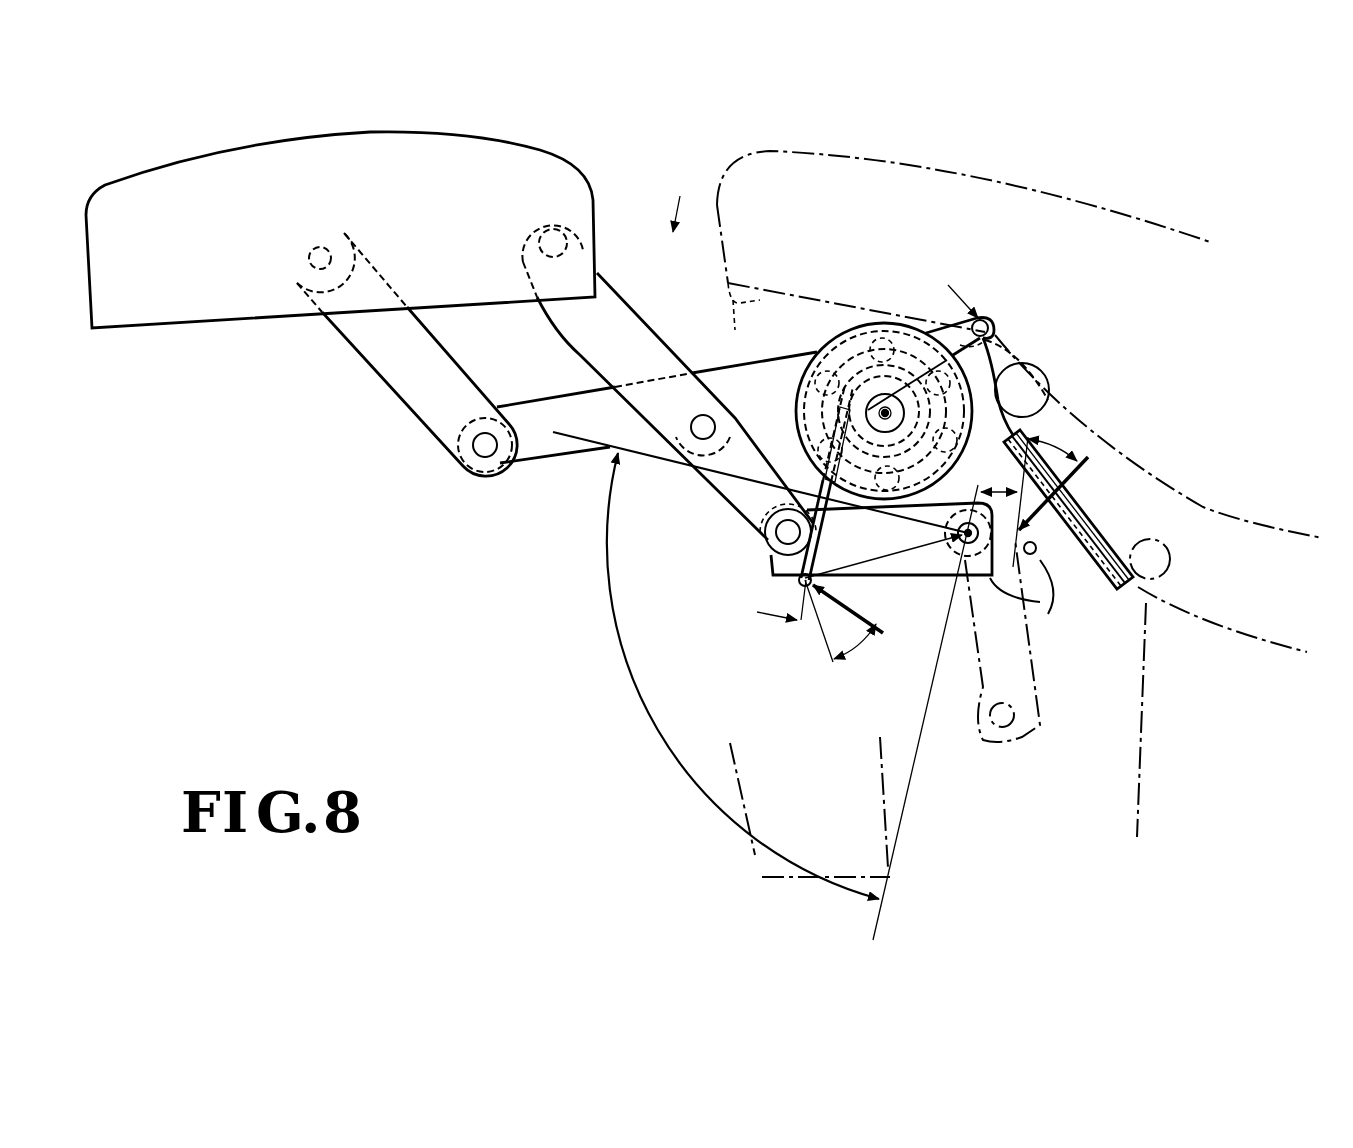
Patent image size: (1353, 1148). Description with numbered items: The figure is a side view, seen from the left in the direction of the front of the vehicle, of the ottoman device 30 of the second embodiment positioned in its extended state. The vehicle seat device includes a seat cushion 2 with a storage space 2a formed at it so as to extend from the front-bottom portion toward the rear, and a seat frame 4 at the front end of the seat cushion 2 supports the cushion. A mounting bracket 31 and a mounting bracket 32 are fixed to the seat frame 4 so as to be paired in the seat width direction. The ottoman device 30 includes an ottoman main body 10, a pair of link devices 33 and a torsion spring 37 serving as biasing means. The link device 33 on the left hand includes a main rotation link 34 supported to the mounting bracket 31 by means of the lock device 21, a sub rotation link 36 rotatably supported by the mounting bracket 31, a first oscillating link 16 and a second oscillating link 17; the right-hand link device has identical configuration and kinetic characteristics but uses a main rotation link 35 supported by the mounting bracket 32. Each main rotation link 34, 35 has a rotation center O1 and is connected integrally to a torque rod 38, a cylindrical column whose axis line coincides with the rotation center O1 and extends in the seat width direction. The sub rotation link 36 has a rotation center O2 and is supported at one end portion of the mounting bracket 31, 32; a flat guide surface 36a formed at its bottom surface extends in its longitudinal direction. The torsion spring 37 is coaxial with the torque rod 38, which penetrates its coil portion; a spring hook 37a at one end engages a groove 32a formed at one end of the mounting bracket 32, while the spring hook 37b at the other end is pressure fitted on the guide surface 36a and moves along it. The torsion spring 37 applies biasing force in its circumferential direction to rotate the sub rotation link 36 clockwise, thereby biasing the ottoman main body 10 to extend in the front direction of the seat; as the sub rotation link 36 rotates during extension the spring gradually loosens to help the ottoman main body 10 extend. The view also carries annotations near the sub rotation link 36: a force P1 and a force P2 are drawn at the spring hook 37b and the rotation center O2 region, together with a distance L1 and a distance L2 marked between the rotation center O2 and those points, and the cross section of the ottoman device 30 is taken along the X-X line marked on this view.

The seat cushion 2 is at (980, 178).
The storage space 2a is at (733, 300).
The seat frame 4 is at (1077, 402).
The ottoman main body 10 is at (254, 146).
The first oscillating link 16 is at (356, 355).
The second oscillating link 17 is at (628, 303).
The lock device 21 is at (887, 322).
The ottoman device 30 is at (677, 201).
The mounting bracket 31 is at (1078, 528).
The mounting bracket 32 is at (1068, 509).
The groove 32a is at (1002, 337).
The link device 33 is at (650, 442).
The main rotation link 34 is at (533, 462).
The main rotation link 35 is at (555, 455).
The sub rotation link 36 is at (770, 557).
The guide surface 36a is at (925, 582).
The torsion spring 37 is at (814, 356).
The spring hook 37a is at (980, 316).
The spring hook 37b is at (802, 582).
The torque rod 38 is at (847, 345).
The rotation center O1 is at (920, 425).
The rotation center O2 is at (995, 555).
The distance L1 is at (999, 478).
The distance L2 is at (883, 556).
The force P1 is at (1053, 502).
The force P2 is at (855, 621).
The X-X line X is at (853, 452).